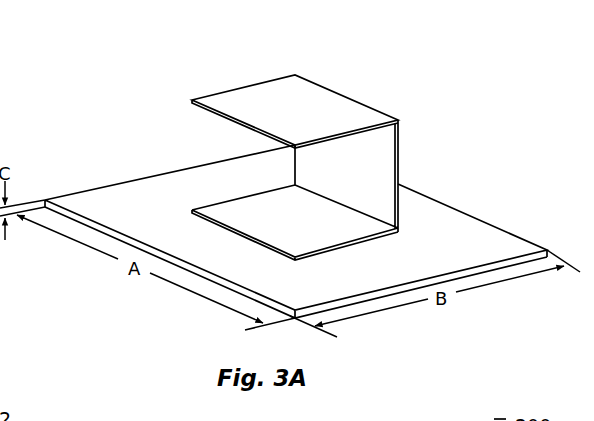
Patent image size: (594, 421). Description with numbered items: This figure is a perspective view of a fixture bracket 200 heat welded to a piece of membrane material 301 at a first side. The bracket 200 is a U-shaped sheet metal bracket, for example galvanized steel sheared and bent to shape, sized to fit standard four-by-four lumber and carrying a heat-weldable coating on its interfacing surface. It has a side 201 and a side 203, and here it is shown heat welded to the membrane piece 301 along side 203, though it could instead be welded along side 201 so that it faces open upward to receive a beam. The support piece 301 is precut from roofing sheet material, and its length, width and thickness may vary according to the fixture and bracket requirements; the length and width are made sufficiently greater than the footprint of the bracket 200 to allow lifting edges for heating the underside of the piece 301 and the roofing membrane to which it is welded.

The fixture bracket 200 is at (357, 152).
The side 201 is at (400, 157).
The side 203 is at (308, 102).
The membrane material piece 301 is at (143, 190).